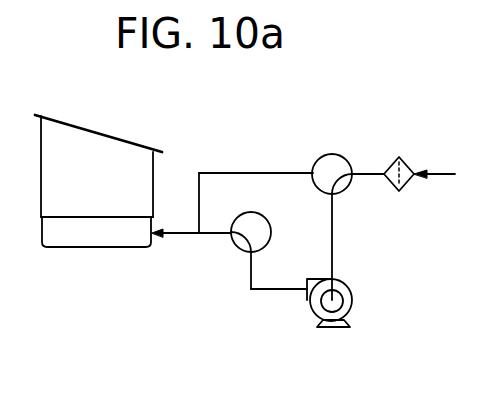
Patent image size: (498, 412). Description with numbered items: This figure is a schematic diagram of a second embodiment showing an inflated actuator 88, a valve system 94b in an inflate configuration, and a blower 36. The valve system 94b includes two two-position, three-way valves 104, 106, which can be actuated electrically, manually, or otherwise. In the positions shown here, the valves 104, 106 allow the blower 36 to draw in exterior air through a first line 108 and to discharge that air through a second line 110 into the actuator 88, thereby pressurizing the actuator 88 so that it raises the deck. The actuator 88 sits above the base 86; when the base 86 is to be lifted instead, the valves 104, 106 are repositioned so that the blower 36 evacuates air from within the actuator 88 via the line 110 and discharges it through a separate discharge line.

The actuator 88 is at (87, 128).
The base 86 is at (97, 248).
The second line 110 is at (181, 236).
The valve 104 is at (237, 246).
The valve 106 is at (320, 158).
The valve system 94b is at (360, 136).
The first line 108 is at (440, 176).
The blower 36 is at (357, 306).